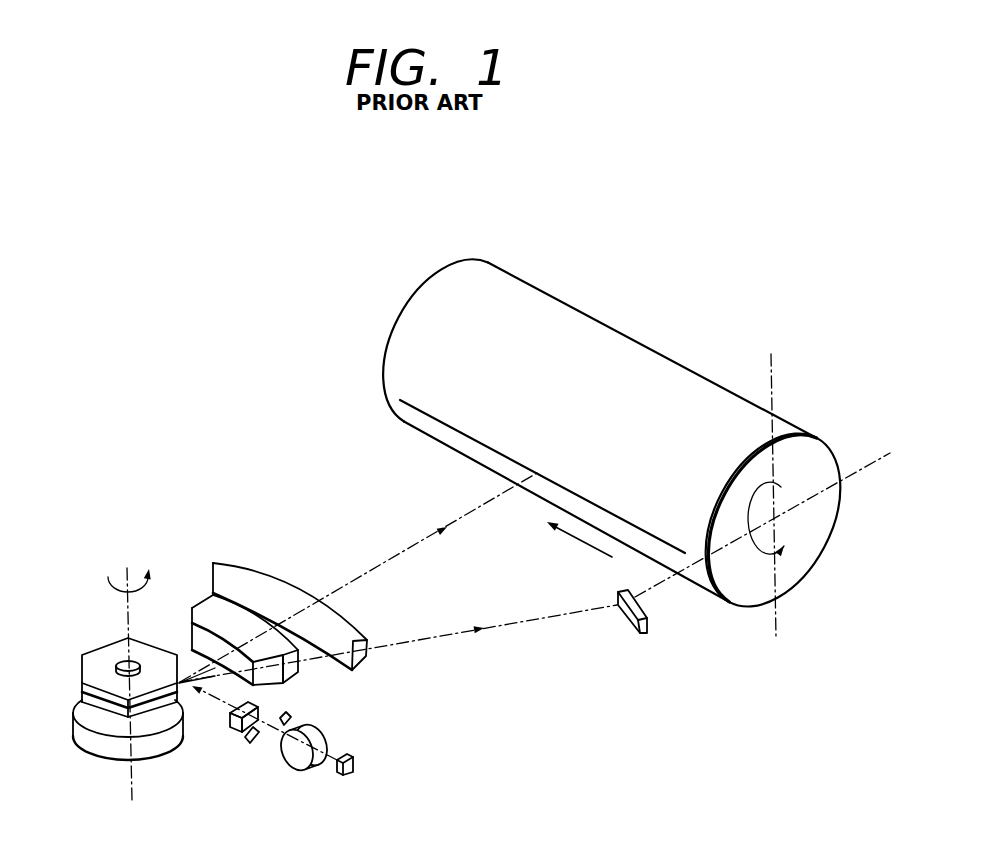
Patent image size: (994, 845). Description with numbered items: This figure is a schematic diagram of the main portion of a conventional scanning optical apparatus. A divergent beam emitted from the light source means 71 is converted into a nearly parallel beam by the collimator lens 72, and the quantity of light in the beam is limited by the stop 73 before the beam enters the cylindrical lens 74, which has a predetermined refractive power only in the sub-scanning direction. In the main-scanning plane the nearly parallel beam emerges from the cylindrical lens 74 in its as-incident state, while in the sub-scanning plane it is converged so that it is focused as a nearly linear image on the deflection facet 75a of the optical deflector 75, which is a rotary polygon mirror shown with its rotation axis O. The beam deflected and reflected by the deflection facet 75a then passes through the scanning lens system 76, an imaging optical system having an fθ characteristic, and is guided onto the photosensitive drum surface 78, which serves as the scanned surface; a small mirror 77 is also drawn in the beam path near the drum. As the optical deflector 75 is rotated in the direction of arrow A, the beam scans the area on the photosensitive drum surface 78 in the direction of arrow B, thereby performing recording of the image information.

The light source means 71 is at (353, 757).
The collimator lens 72 is at (305, 770).
The stop 73 is at (290, 714).
The cylindrical lens 74 is at (233, 742).
The optical deflector 75 is at (85, 670).
The deflection facet 75a is at (182, 686).
The scanning lens system 76 is at (217, 553).
The reflecting mirror 77 is at (625, 623).
The photosensitive drum surface 78 is at (390, 373).
The direction of arrow A is at (108, 577).
The direction of arrow B is at (582, 542).
The rotation axis of polygon mirror O is at (128, 623).